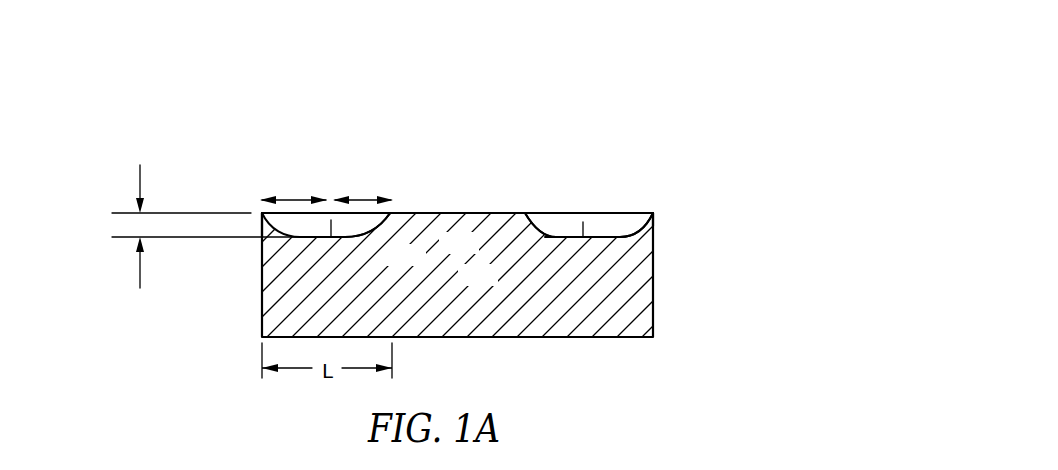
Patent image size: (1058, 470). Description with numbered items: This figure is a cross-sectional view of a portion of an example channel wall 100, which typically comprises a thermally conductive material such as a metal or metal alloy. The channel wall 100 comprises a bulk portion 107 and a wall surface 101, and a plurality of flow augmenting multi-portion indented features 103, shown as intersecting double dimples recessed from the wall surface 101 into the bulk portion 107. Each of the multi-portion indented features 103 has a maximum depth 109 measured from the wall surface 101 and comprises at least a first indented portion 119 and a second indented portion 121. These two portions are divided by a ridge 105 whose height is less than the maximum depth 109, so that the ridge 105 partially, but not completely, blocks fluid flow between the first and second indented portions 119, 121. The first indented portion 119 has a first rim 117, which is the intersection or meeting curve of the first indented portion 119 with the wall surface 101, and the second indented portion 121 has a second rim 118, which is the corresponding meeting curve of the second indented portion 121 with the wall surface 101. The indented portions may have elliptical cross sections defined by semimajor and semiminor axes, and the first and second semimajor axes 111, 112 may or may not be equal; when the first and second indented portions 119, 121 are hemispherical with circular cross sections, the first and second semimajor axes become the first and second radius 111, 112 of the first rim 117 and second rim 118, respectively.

The channel wall 100 is at (434, 200).
The wall surface 101 is at (443, 213).
The multi-portion indented features 103 is at (611, 213).
The ridge 105 is at (292, 240).
The bulk portion 107 is at (593, 320).
The maximum depth 109 is at (133, 229).
The first semimajor axis (first radius) 111 is at (288, 198).
The second semimajor axis (second radius) 112 is at (372, 198).
The first rim 117 is at (657, 212).
The second rim 118 is at (527, 214).
The first indented portion 119 is at (261, 213).
The second indented portion 121 is at (348, 226).